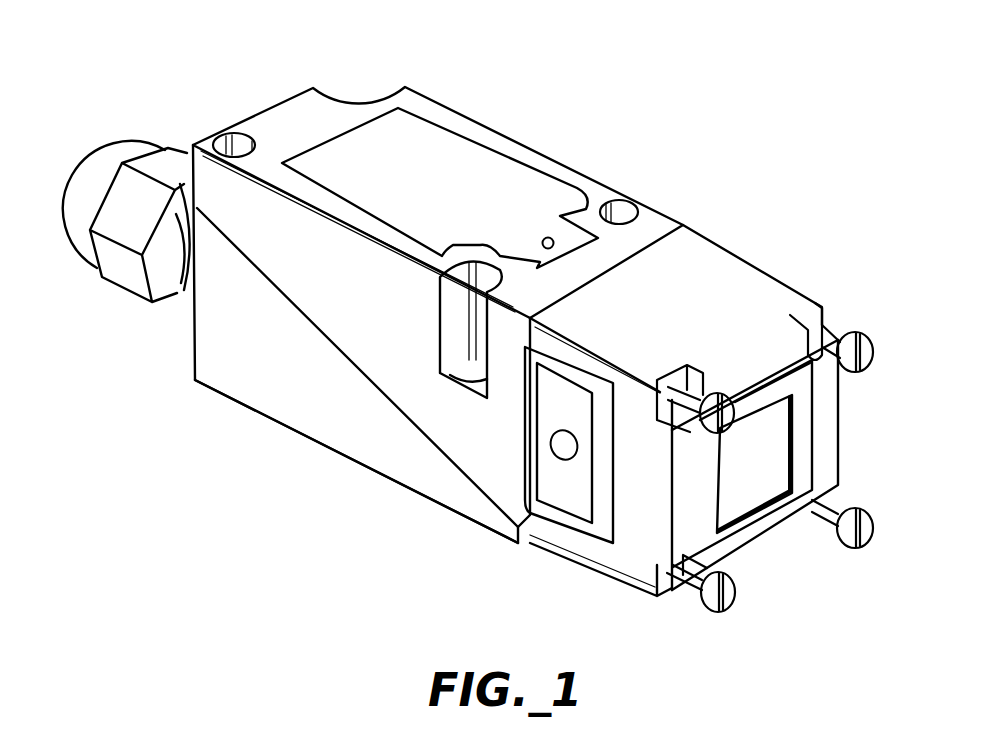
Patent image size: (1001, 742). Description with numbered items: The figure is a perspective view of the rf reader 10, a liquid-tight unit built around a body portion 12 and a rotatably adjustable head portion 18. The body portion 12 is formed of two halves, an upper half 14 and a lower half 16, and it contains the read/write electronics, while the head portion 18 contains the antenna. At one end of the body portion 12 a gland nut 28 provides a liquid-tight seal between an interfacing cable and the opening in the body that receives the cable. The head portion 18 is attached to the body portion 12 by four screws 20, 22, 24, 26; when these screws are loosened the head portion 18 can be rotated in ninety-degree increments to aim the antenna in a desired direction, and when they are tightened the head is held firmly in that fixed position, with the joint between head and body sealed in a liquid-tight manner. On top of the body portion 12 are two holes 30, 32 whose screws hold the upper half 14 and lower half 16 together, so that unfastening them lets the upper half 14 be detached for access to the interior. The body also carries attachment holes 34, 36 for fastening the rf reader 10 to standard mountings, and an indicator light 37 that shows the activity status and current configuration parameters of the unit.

The rf reader 10 is at (622, 58).
The body portion 12 is at (700, 231).
The upper half 14 is at (311, 309).
The lower half 16 is at (253, 406).
The head portion 18 is at (883, 321).
The screw 20 is at (859, 371).
The screw 22 is at (855, 549).
The screw 24 is at (726, 612).
The screw 26 is at (718, 392).
The gland nut 28 is at (131, 292).
The screw hole 30 is at (258, 143).
The screw hole 32 is at (598, 201).
The attachment hole 34 is at (483, 406).
The attachment hole 36 is at (365, 53).
The indicator light 37 is at (543, 239).